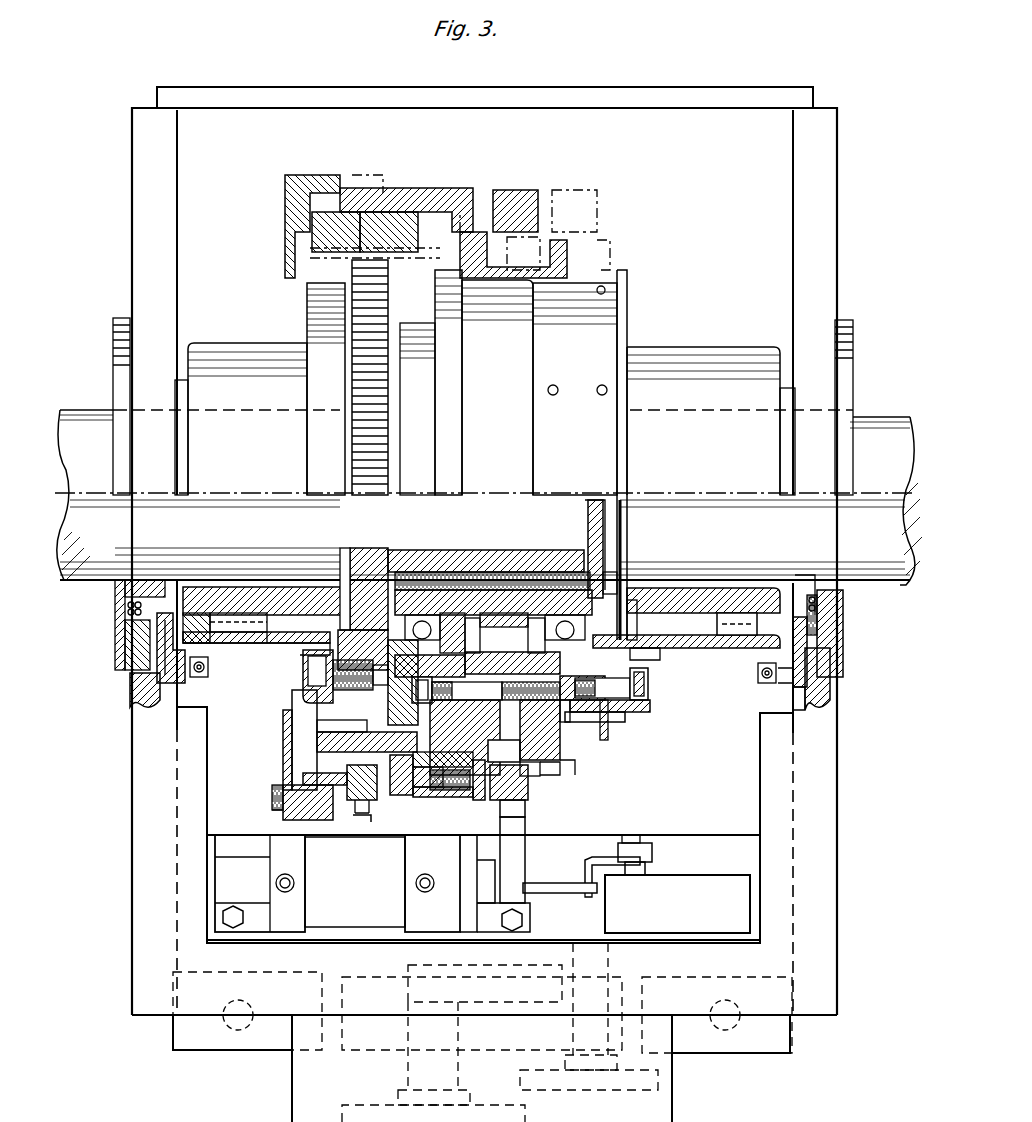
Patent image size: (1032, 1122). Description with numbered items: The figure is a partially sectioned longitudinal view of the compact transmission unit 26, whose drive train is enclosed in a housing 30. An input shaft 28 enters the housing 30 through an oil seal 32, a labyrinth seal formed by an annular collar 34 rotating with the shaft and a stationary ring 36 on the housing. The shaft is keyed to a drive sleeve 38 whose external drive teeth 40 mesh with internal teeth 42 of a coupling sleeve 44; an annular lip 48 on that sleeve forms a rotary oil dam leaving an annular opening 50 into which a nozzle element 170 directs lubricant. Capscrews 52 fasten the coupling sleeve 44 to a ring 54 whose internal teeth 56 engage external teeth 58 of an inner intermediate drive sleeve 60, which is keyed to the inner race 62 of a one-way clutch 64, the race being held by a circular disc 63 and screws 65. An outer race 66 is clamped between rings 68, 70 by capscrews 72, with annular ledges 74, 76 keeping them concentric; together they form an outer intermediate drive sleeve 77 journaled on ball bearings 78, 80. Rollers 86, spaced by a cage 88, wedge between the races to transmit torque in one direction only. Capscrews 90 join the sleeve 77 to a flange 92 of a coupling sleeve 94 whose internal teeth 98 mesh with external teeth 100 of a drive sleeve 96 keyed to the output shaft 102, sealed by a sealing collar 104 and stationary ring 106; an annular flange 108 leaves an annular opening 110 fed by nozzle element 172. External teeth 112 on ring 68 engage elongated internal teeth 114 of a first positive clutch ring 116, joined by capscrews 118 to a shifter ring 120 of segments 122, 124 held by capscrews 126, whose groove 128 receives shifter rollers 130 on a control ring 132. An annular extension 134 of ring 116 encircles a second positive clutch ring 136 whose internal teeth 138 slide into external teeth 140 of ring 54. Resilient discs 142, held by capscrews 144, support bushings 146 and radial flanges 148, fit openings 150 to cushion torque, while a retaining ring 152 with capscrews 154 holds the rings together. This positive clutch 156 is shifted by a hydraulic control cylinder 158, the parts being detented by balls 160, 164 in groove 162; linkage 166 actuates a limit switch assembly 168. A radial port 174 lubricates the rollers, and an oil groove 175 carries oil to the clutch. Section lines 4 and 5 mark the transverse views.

The compact transmission unit 26 is at (201, 70).
The input shaft 28 is at (88, 418).
The housing 30 is at (132, 780).
The oil seal 32 is at (125, 625).
The annular collar 34 is at (130, 600).
The stationary ring 36 is at (128, 650).
The drive sleeve 38 is at (298, 598).
The external drive teeth 40 is at (300, 590).
The internal teeth 42 is at (258, 640).
The coupling sleeve 44 is at (275, 650).
The annular lip 48 is at (192, 628).
The annular opening 50 is at (190, 572).
The capscrews 52 is at (302, 688).
The coupling sleeve ring 54 is at (338, 668).
The internal teeth 56 is at (372, 580).
The external teeth 58 is at (340, 627).
The inner intermediate drive sleeve 60 is at (432, 548).
The inner race 62 is at (565, 570).
The circular disc 63 is at (593, 500).
The one-way clutch 64 is at (440, 616).
The screws 65 is at (628, 500).
The outer race 66 is at (455, 655).
The ring 68 is at (452, 722).
The ring 70 is at (648, 678).
The capscrews 72 is at (416, 686).
The annular ledge 74 is at (430, 664).
The annular ledge 76 is at (565, 700).
The outer intermediate drive sleeve 77 is at (572, 718).
The ball bearing 78 is at (430, 612).
The ball bearing 80 is at (560, 600).
The rollers 86 is at (476, 620).
The cage 88 is at (528, 632).
The capscrews 90 is at (655, 694).
The flange 92 is at (635, 714).
The coupling sleeve 94 is at (695, 648).
The drive sleeve 96 is at (780, 600).
The internal teeth 98 is at (717, 630).
The external teeth 100 is at (690, 620).
The output shaft 102 is at (896, 418).
The sealing collar 104 is at (832, 588).
The stationary ring 106 is at (845, 607).
The annular flange 108 is at (770, 648).
The annular opening 110 is at (772, 575).
The external teeth 112 is at (434, 770).
The internal teeth 114 is at (443, 749).
The first positive clutch ring 116 is at (440, 822).
The capscrews 118 is at (480, 800).
The shifter ring 120 is at (568, 760).
The annular segment 122 is at (452, 795).
The annular segment 124 is at (560, 770).
The capscrews 126 is at (560, 745).
The shifter ring groove 128 is at (544, 765).
The shifter rollers 130 is at (510, 749).
The control ring 132 is at (571, 190).
The annular extension 134 is at (304, 822).
The second positive clutch ring 136 is at (283, 748).
The internal teeth 138 is at (345, 733).
The external teeth 140 is at (350, 717).
The resilient torque-transmitting discs 142 is at (305, 788).
The capscrews 144 is at (378, 805).
The support bushings 146 is at (345, 815).
The radial flanges 148 is at (300, 775).
The openings 150 is at (408, 822).
The retaining ring 152 is at (283, 735).
The capscrews 154 is at (283, 816).
The positive clutch 156 is at (378, 717).
The hydraulic control cylinder 158 is at (381, 942).
The detent balls 160 is at (603, 683).
The internal annular groove 162 is at (545, 296).
The detent balls 164 is at (600, 296).
The connecting linkage 166 is at (566, 898).
The limit switch assembly 168 is at (714, 873).
The nozzle element 170 is at (140, 700).
The nozzle element 172 is at (808, 700).
The radial port 174 is at (469, 691).
The oil groove 175 is at (607, 632).
The section line 4 is at (528, 855).
The section line 5 is at (335, 813).